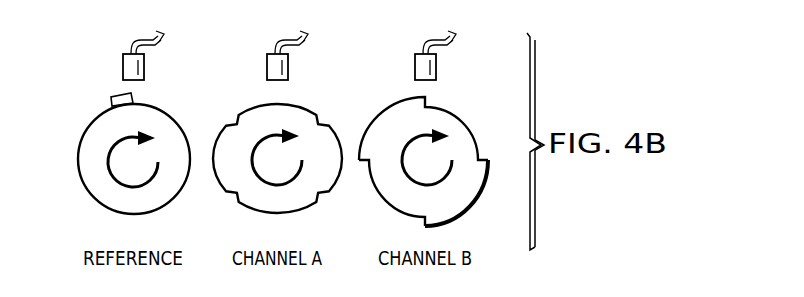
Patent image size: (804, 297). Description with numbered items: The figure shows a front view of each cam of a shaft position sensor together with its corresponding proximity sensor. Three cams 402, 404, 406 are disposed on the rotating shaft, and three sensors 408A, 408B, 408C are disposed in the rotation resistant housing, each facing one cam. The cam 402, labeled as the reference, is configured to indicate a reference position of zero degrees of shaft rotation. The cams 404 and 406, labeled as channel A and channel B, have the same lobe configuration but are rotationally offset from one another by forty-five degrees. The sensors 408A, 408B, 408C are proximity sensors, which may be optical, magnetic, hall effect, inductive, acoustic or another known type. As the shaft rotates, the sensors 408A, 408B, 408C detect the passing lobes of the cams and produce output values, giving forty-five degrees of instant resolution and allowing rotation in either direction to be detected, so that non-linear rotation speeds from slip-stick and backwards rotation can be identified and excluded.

The cam 402 is at (90, 193).
The cam 404 is at (232, 203).
The cam 406 is at (387, 203).
The sensor 408A is at (123, 69).
The sensor 408B is at (267, 69).
The sensor 408C is at (415, 69).